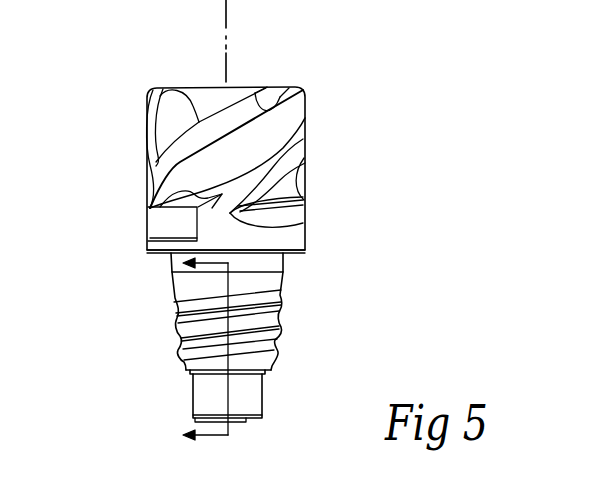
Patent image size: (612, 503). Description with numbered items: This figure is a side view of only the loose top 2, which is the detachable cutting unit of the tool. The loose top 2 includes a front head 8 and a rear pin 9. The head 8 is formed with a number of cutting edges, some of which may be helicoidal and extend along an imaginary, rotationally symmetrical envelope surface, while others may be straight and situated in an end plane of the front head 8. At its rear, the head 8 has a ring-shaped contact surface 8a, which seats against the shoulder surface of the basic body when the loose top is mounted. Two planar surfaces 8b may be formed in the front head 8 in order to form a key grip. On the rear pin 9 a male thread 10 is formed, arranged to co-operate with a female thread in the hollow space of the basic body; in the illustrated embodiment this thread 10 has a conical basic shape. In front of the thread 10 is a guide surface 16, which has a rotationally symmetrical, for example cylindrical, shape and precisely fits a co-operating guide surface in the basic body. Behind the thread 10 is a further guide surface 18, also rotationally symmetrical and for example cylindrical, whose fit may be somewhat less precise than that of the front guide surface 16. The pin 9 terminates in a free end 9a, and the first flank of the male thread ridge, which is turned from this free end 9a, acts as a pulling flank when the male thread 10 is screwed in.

The loose top 2 is at (135, 178).
The front head 8 is at (308, 132).
The rear ring-shaped contact surface 8a is at (156, 253).
The planar surfaces 8b is at (157, 225).
The guide surface 16 is at (285, 262).
The male thread 10 is at (160, 333).
The guide surface 18 is at (200, 402).
The rear pin 9 is at (283, 365).
The free end of the pin 9a is at (248, 422).